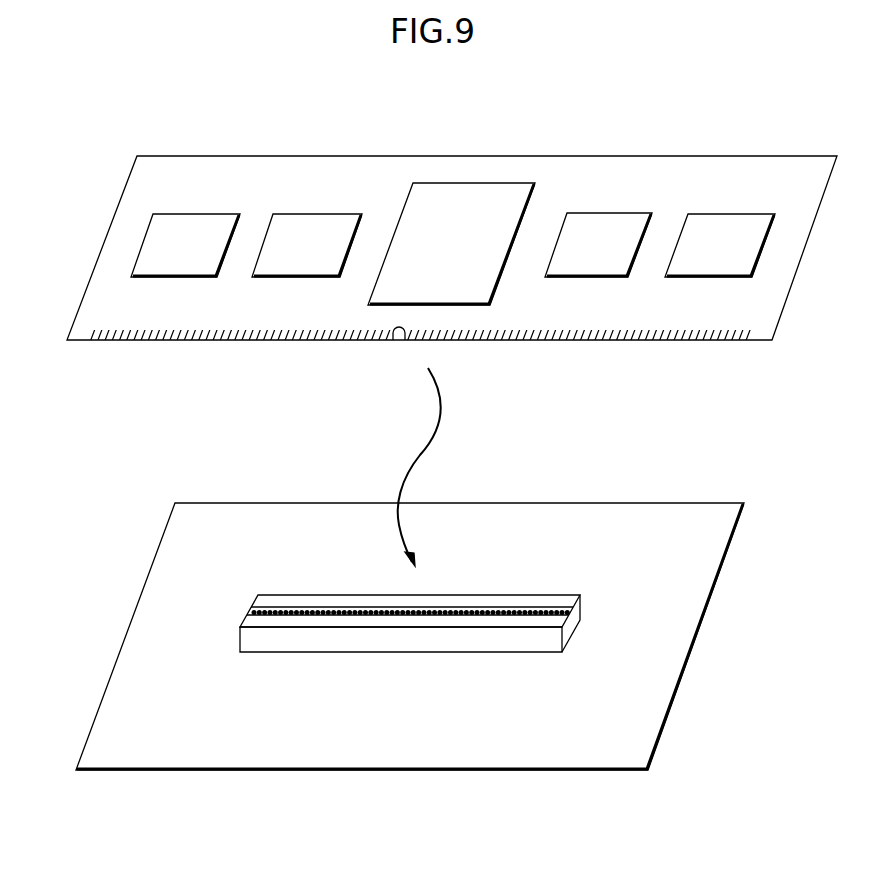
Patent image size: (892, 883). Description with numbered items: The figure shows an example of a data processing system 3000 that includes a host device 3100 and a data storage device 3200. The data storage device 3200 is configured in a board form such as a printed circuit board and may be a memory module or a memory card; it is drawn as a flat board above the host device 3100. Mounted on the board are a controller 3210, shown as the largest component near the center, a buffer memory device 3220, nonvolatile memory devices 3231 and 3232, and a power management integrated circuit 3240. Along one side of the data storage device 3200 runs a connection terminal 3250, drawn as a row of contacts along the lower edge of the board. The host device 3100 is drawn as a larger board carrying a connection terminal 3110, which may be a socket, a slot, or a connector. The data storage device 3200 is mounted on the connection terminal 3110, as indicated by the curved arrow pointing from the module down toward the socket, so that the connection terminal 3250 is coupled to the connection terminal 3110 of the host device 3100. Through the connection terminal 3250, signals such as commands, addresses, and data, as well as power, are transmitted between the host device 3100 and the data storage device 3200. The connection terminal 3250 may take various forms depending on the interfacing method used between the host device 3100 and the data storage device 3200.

The data processing system 3000 is at (108, 114).
The data storage device 3200 is at (452, 274).
The power management integrated circuit 3240 is at (185, 245).
The buffer memory device 3220 is at (307, 245).
The controller 3210 is at (451, 244).
The nonvolatile memory device 3231 is at (598, 245).
The nonvolatile memory device 3232 is at (720, 245).
The connection terminal 3250 is at (113, 341).
The host device 3100 is at (410, 636).
The connection terminal 3110 is at (582, 603).